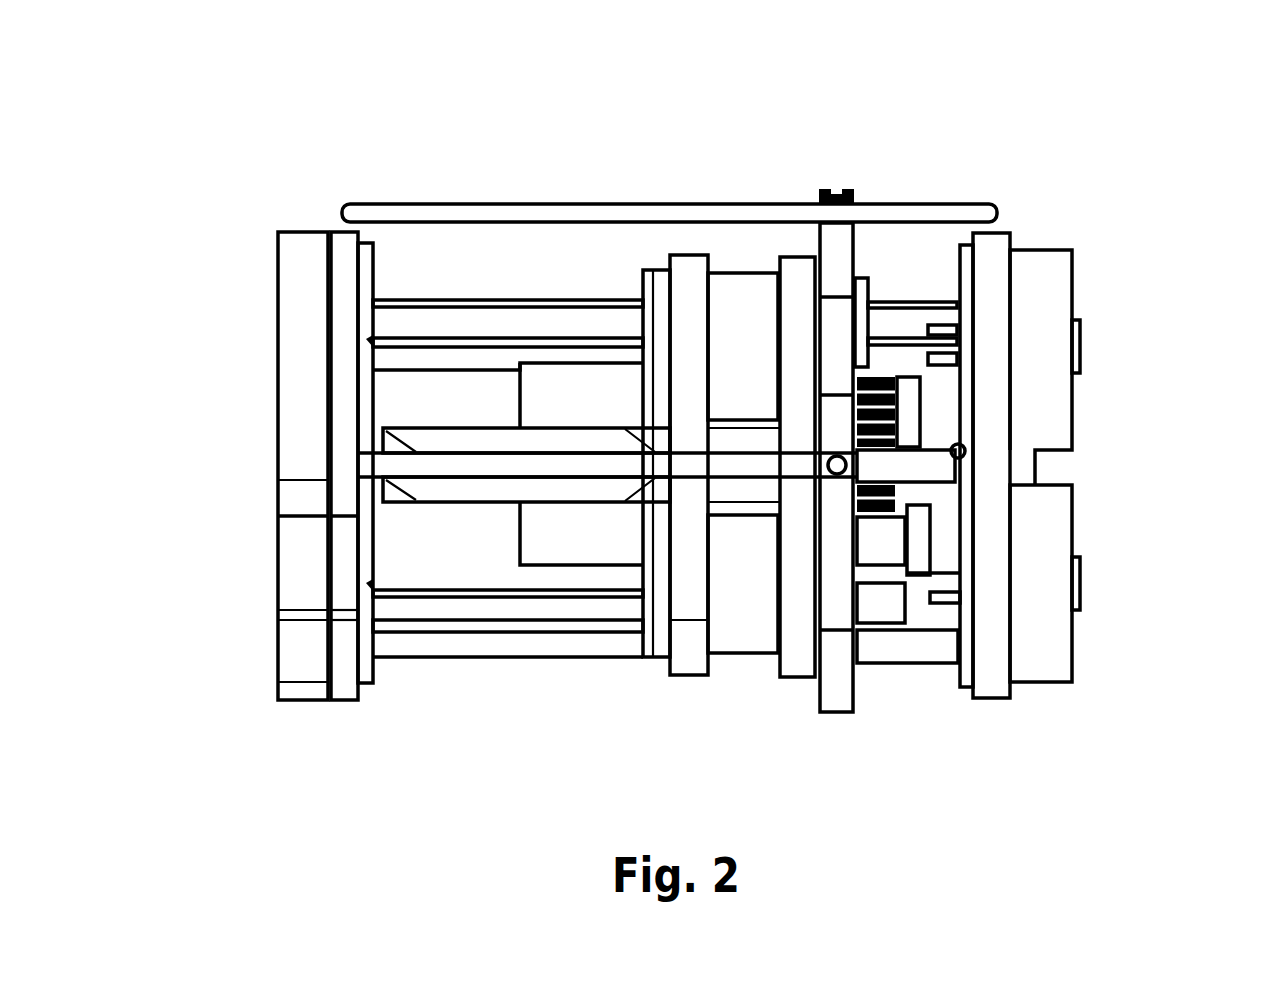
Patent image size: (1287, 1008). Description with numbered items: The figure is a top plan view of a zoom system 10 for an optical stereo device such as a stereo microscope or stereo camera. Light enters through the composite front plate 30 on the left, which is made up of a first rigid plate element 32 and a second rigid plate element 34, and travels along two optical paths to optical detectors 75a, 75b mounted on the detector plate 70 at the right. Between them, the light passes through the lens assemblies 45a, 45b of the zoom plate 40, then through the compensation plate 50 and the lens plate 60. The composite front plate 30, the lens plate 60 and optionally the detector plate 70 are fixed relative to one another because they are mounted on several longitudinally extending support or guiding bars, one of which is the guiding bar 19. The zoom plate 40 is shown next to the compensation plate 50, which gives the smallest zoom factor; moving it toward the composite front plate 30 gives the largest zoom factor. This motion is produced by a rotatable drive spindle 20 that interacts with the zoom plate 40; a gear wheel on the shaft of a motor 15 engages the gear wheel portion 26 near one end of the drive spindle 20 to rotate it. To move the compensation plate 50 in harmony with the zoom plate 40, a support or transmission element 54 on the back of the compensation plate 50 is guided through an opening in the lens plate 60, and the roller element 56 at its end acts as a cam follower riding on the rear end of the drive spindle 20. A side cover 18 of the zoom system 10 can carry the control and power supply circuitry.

The zoom system 10 is at (220, 145).
The motor 15 is at (558, 540).
The second side cover 18 is at (580, 192).
The support or guiding bar 19 is at (428, 468).
The drive spindle 20 is at (487, 508).
The gear wheel portion 26 is at (875, 390).
The composite front plate 30 is at (313, 192).
The first rigid plate element 32 is at (298, 380).
The second rigid plate element 34 is at (345, 418).
The zoom plate 40 is at (690, 275).
The lens assembly 45a is at (732, 612).
The lens assembly 45b is at (735, 300).
The compensation plate 50 is at (790, 600).
The support or transmission element 54 is at (908, 463).
The roller element or cam follower 56 is at (958, 442).
The lens plate 60 is at (828, 250).
The detector plate 70 is at (978, 330).
The optical detector 75a is at (1040, 625).
The optical detector 75b is at (1037, 312).